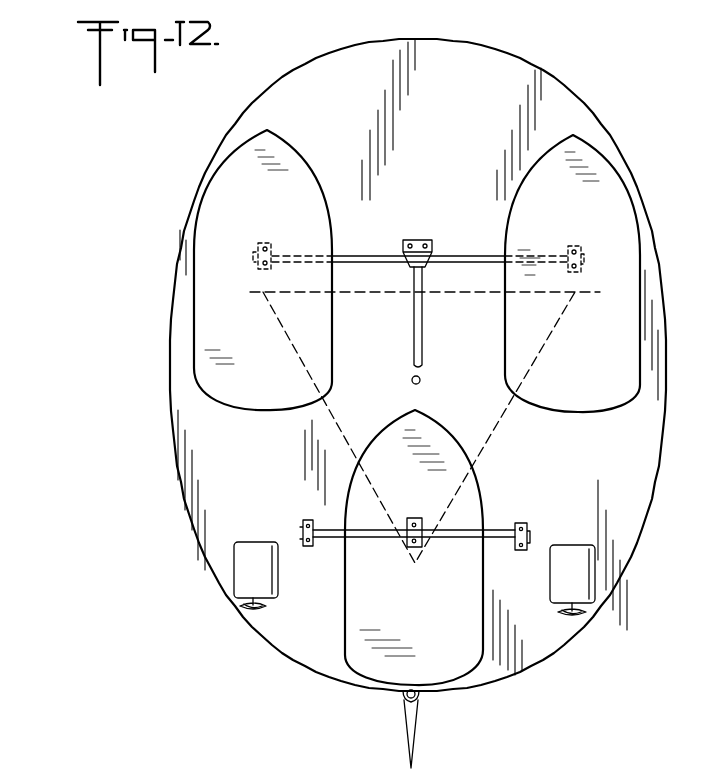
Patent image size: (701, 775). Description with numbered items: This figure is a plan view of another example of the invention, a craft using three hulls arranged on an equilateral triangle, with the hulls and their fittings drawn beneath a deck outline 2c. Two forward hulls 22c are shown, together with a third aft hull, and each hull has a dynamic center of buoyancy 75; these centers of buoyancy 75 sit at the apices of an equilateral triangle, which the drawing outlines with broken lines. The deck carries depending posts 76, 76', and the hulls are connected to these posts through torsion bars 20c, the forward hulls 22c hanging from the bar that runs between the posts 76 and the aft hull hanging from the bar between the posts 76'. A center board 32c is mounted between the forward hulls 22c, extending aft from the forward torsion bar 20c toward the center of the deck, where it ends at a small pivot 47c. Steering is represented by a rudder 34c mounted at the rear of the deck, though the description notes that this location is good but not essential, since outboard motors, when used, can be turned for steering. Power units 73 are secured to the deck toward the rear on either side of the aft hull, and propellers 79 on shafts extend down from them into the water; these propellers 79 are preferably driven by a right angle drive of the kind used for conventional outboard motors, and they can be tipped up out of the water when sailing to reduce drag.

The body 2c is at (464, 134).
The torsion bar 20c is at (454, 257).
The forward hull 22c is at (298, 174).
The center board 32c is at (426, 320).
The rudder 34c is at (416, 726).
The pivot 47c is at (422, 382).
The motor housing 73 is at (250, 555).
The dynamic center of buoyancy 75 is at (252, 292).
The depending post 76 is at (408, 231).
The depending post 76' is at (411, 516).
The propeller 79 is at (267, 607).